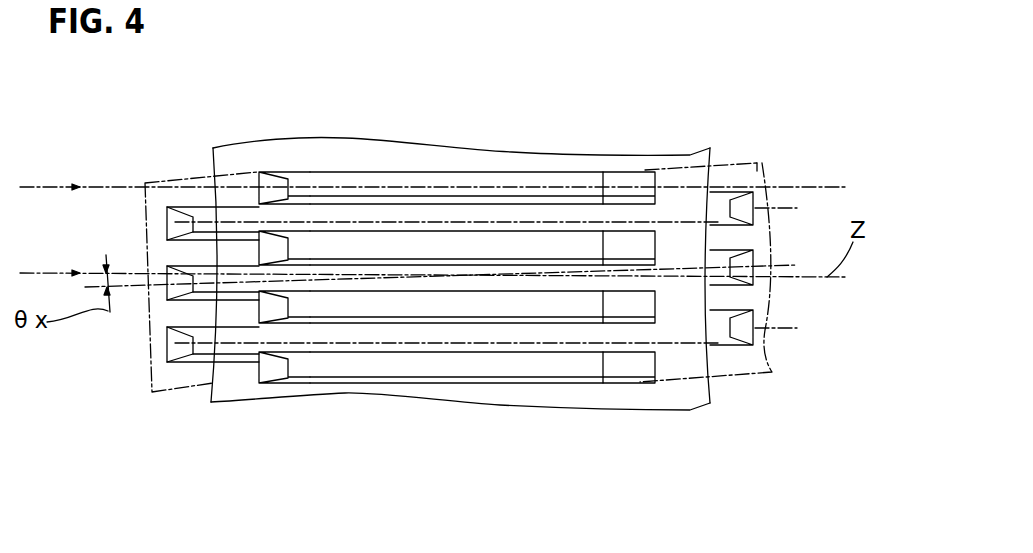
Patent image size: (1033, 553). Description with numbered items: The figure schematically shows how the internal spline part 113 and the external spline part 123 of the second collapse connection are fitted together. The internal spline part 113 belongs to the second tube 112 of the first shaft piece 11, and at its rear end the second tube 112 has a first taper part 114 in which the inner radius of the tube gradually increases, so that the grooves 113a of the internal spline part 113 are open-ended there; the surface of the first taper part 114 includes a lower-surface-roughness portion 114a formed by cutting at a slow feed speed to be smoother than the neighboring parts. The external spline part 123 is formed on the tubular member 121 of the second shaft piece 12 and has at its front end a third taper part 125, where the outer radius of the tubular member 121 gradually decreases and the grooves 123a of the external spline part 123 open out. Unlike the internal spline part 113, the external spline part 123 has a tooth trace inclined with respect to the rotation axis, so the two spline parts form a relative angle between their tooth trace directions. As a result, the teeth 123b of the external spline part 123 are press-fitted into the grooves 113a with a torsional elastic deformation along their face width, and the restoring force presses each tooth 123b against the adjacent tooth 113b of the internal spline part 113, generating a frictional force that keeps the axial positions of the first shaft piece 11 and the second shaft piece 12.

The first shaft piece 11 is at (460, 210).
The second tube 112 is at (423, 163).
The second shaft piece 12 is at (472, 209).
The tubular member 121 is at (758, 164).
The external spline part 123 is at (212, 100).
The grooves of external spline part 123a is at (307, 333).
The teeth of external spline part 123b is at (252, 340).
The third taper part 125 is at (173, 345).
The internal spline part 113 is at (445, 467).
The grooves of internal spline part 113a is at (567, 232).
The teeth of internal spline part 113b is at (507, 248).
The first taper part 114 is at (662, 279).
The lower-surface-roughness portion 114a is at (642, 245).